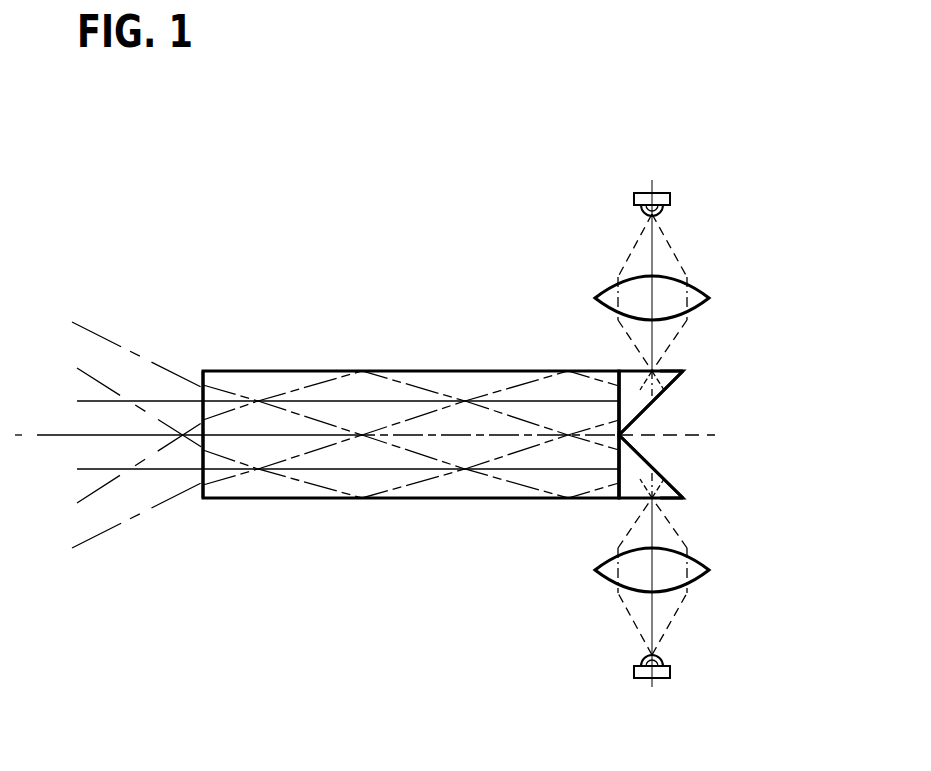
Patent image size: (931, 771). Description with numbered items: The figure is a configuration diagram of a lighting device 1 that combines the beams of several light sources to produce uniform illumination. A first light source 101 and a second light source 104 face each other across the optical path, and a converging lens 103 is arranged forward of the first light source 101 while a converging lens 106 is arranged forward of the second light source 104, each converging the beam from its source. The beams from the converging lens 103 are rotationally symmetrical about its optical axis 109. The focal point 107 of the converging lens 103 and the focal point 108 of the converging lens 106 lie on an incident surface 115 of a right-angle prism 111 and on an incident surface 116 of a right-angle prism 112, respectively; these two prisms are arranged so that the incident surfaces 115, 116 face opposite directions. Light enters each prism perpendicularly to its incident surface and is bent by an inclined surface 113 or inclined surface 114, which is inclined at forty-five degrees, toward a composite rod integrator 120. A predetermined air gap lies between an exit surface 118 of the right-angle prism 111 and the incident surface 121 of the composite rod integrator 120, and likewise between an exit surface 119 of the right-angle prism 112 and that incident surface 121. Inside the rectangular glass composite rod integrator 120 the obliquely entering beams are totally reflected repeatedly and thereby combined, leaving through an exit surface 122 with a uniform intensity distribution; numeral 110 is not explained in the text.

The lighting device 1 is at (187, 187).
The first light source 101 is at (670, 192).
The converging lens 103 is at (693, 294).
The second light source 104 is at (671, 671).
The converging lens 106 is at (694, 572).
The focal point 107 is at (672, 356).
The focal point 108 is at (660, 500).
The optical axis 109 is at (652, 193).
The second substrate 110 is at (652, 687).
The right-angle prism 111 is at (684, 372).
The right-angle prism 112 is at (650, 497).
The inclined surface 113 is at (661, 393).
The inclined surface 114 is at (646, 462).
The incident surface 115 is at (636, 386).
The incident surface 116 is at (627, 496).
The exit surface 118 is at (626, 403).
The exit surface 119 is at (618, 480).
The composite rod integrator 120 is at (362, 482).
The incident surface 121 is at (563, 406).
The exit surface 122 is at (203, 491).